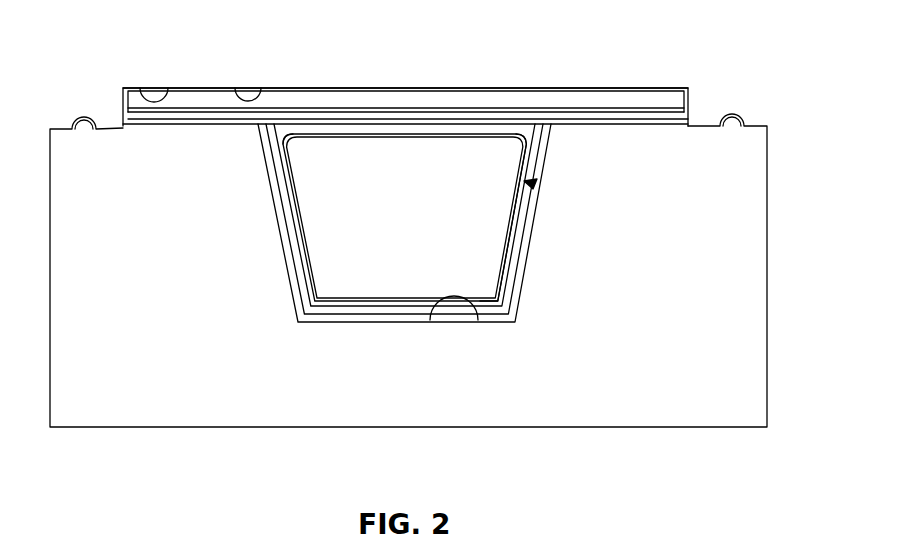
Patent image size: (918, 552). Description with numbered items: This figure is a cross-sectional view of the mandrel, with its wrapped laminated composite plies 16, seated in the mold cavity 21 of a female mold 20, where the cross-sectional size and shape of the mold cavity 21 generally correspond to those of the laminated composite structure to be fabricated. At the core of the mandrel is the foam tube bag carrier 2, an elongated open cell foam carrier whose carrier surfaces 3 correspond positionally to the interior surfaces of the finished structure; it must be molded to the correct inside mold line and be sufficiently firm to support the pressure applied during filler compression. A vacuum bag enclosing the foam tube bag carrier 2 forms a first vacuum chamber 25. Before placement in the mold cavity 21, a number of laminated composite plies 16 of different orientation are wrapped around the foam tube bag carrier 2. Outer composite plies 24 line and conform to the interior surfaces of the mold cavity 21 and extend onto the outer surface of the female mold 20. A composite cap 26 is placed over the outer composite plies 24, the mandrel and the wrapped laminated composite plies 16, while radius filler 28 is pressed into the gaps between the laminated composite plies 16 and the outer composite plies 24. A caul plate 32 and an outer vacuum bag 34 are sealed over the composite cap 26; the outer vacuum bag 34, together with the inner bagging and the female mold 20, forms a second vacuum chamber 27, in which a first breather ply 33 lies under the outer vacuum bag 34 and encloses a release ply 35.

The foam tube bag carrier 2 is at (528, 182).
The carrier surfaces 3 is at (424, 136).
The laminated composite plies 16 is at (520, 229).
The female mold 20 is at (727, 270).
The mold cavity 21 is at (478, 320).
The outer composite plies 24 is at (175, 124).
The first vacuum chamber 25 is at (472, 277).
The composite cap 26 is at (650, 113).
The second vacuum chamber 27 is at (493, 101).
The radius filler 28 is at (300, 135).
The caul plate 32 is at (417, 104).
The first breather ply 33 is at (141, 90).
The outer vacuum bag 34 is at (202, 88).
The release ply 35 is at (260, 90).